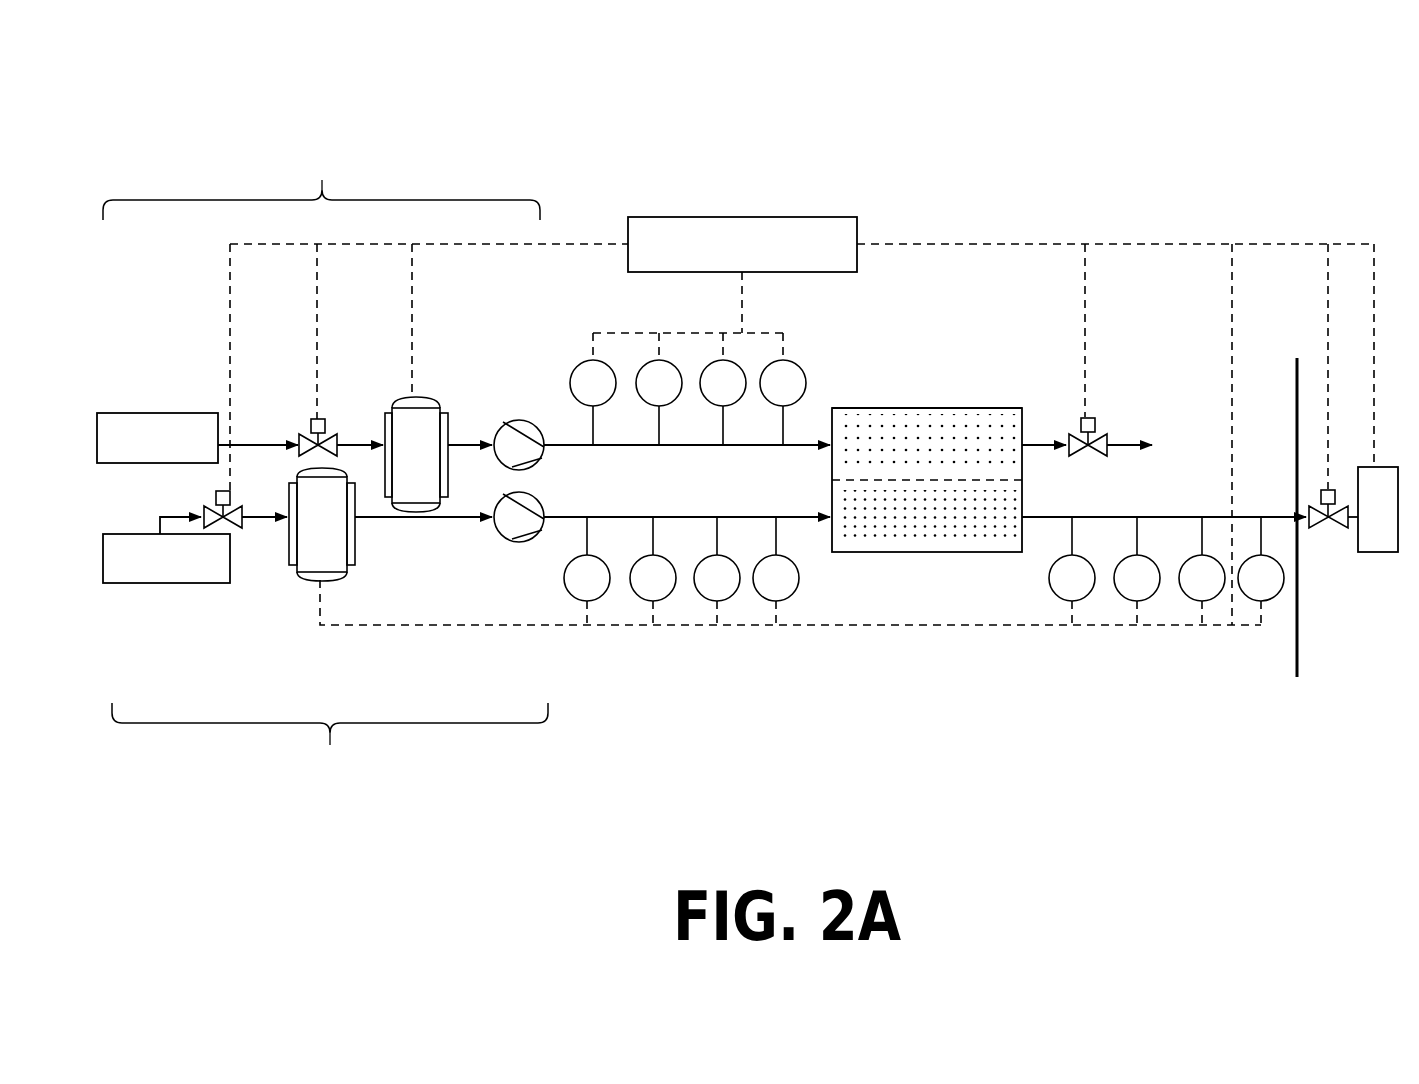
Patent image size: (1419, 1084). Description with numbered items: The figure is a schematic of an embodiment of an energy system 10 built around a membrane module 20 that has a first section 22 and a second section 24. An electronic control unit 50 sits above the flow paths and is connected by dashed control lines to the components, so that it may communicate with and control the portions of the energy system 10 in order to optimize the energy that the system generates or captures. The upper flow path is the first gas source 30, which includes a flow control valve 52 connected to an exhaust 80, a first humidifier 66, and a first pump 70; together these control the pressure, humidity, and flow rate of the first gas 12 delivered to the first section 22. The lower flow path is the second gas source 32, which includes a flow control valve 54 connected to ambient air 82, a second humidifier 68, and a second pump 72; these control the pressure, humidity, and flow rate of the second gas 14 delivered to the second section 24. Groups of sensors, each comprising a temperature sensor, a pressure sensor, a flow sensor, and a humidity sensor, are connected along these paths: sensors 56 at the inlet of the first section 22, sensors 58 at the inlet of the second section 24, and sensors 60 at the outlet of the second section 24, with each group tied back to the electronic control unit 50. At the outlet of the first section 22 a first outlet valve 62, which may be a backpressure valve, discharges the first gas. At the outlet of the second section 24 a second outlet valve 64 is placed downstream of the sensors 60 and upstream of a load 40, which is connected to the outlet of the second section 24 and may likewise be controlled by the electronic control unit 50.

The energy system 10 is at (1156, 162).
The first gas 12 is at (912, 424).
The second gas 14 is at (926, 524).
The membrane module 20 is at (856, 395).
The first section 22 is at (963, 405).
The second section 24 is at (1024, 502).
The first gas source 30 is at (321, 180).
The second gas source 32 is at (330, 743).
The load 40 is at (1372, 560).
The electronic control unit 50 is at (745, 213).
The flow control valve 52 is at (295, 418).
The flow control valve 54 is at (237, 548).
The sensors 56 is at (572, 342).
The sensors 58 is at (801, 580).
The sensors 60 is at (1036, 578).
The first outlet valve 62 is at (1068, 402).
The second outlet valve 64 is at (1332, 548).
The first humidifier 66 is at (390, 395).
The second humidifier 68 is at (362, 548).
The first pump 70 is at (512, 412).
The second pump 72 is at (500, 548).
The exhaust 80 is at (197, 412).
The ambient air 82 is at (148, 586).